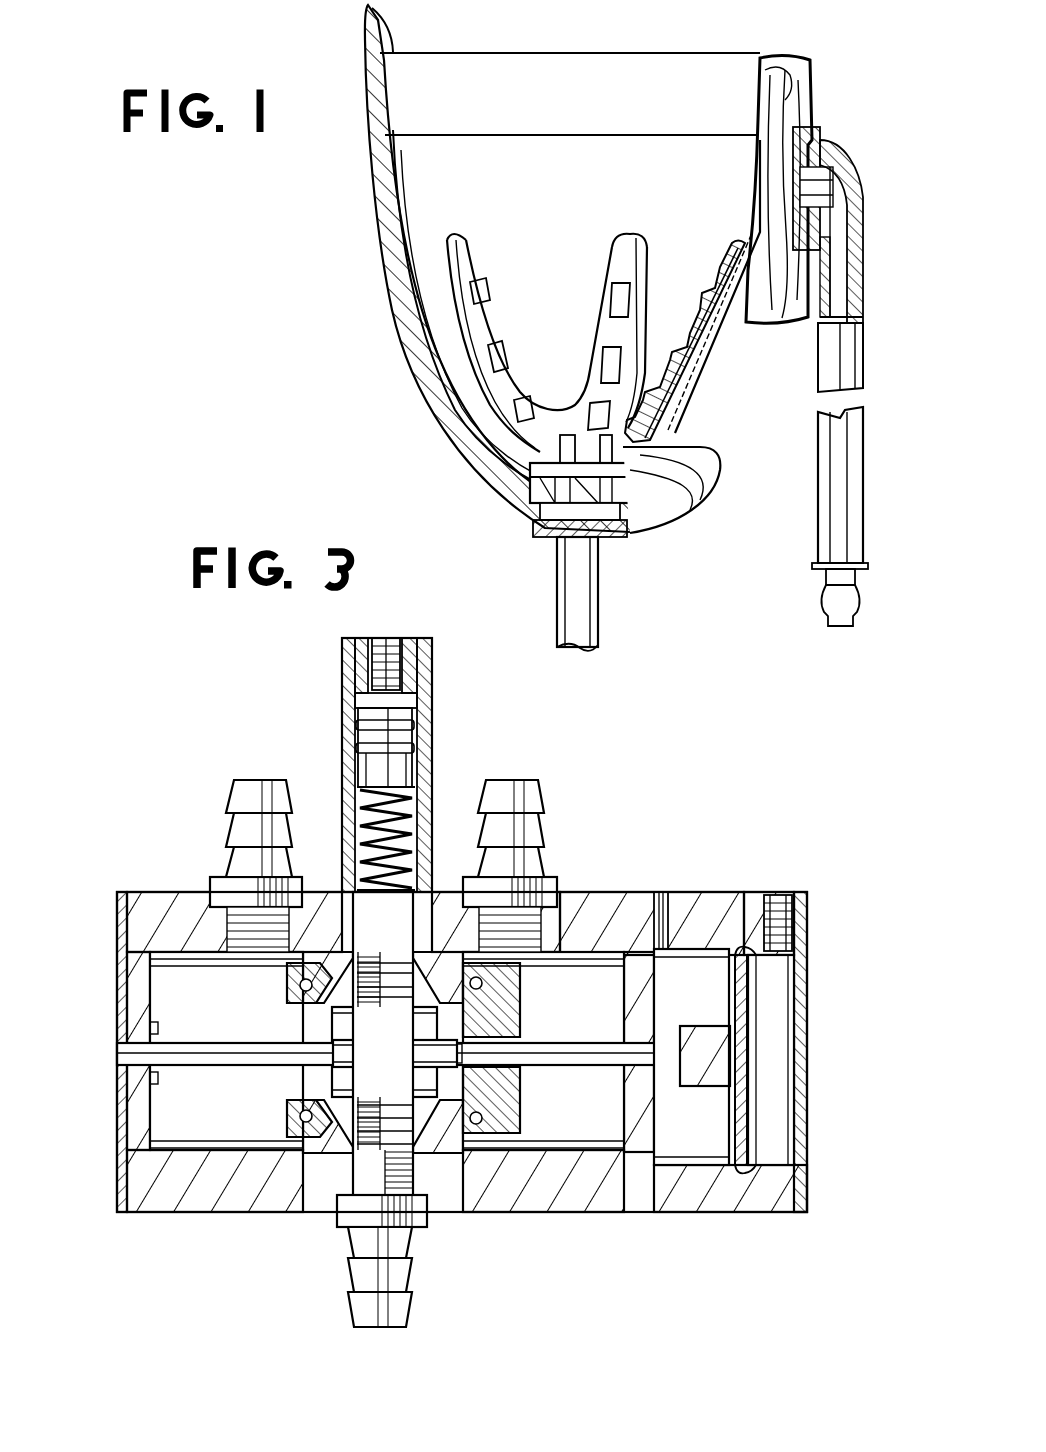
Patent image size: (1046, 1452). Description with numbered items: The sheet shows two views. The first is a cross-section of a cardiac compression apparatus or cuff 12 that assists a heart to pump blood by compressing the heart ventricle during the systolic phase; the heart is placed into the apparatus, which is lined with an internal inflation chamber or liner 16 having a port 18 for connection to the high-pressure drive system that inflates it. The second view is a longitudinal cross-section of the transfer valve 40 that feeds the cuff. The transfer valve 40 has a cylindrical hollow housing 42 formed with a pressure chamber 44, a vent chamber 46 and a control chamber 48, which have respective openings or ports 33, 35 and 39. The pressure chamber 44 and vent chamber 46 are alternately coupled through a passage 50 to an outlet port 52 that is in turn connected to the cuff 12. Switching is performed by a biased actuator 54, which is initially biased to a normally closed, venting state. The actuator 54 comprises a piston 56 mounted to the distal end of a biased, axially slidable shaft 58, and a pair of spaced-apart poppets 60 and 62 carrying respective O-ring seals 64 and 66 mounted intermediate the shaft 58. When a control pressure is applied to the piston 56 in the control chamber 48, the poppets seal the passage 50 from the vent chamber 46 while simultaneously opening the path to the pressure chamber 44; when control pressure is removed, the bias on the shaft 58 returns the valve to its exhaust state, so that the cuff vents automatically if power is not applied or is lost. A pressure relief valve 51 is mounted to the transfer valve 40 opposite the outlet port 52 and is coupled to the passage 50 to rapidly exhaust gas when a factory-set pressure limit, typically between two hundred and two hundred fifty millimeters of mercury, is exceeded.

In FIG. 1, the cardiac compression apparatus or cuff 12 is at (370, 236).
In FIG. 1, the internal inflation chamber or liner 16 is at (777, 60).
In FIG. 1, the port 18 is at (847, 598).
In FIG. 3, the opening or port of pressure chamber 33 is at (240, 803).
In FIG. 3, the opening or port of vent chamber 35 is at (507, 786).
In FIG. 3, the opening or port of control chamber 39 is at (778, 892).
In FIG. 3, the transfer valve 40 is at (680, 848).
In FIG. 3, the cylindrical hollow housing 42 is at (598, 912).
In FIG. 3, the pressure chamber 44 is at (152, 1008).
In FIG. 3, the vent chamber 46 is at (560, 1185).
In FIG. 3, the control chamber 48 is at (700, 1165).
In FIG. 3, the passage 50 is at (308, 1082).
In FIG. 3, the pressure relief valve 51 is at (344, 694).
In FIG. 3, the outlet port 52 is at (352, 1281).
In FIG. 3, the biased actuator 54 is at (762, 1012).
In FIG. 3, the piston 56 is at (728, 1112).
In FIG. 3, the shaft 58 is at (556, 1053).
In FIG. 3, the poppet 60 is at (292, 1026).
In FIG. 3, the poppet 62 is at (510, 1078).
In FIG. 3, the O-ring seal 64 is at (300, 990).
In FIG. 3, the O-ring seal 66 is at (505, 1124).